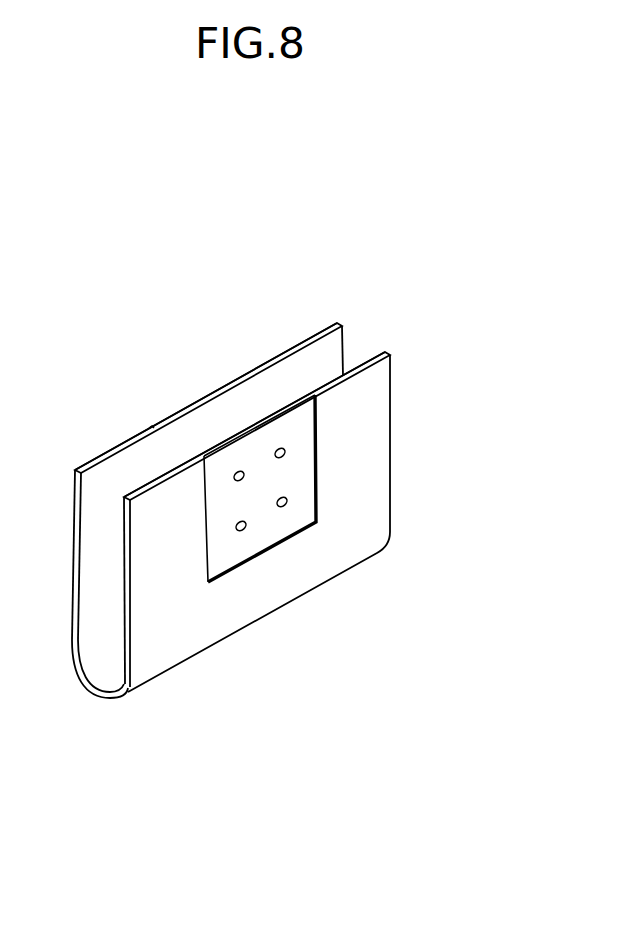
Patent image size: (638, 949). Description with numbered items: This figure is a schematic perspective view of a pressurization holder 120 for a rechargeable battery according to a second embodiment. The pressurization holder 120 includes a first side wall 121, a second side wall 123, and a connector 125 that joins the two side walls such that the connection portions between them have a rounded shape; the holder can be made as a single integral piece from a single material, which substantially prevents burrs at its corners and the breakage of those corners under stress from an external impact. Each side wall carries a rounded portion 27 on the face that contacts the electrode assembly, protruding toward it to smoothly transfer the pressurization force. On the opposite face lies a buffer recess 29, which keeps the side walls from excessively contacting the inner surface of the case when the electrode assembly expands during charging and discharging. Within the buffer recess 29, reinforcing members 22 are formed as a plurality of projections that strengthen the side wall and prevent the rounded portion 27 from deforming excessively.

The pressurization holder 120 is at (412, 338).
The first side wall 121 is at (130, 660).
The second side wall 123 is at (72, 630).
The connector 125 is at (98, 695).
The rounded portion 27 is at (212, 402).
The buffer recess 29 is at (270, 522).
The reinforcing members 22 is at (244, 531).